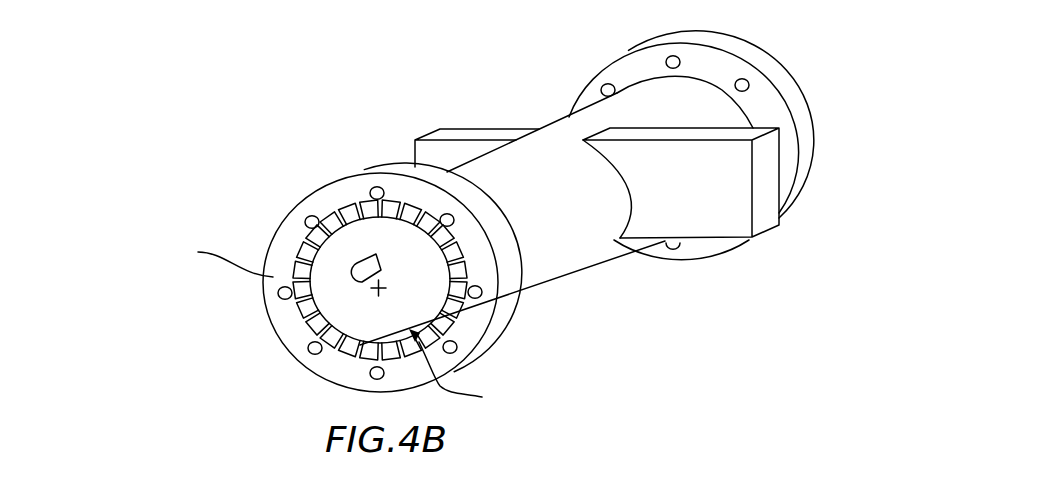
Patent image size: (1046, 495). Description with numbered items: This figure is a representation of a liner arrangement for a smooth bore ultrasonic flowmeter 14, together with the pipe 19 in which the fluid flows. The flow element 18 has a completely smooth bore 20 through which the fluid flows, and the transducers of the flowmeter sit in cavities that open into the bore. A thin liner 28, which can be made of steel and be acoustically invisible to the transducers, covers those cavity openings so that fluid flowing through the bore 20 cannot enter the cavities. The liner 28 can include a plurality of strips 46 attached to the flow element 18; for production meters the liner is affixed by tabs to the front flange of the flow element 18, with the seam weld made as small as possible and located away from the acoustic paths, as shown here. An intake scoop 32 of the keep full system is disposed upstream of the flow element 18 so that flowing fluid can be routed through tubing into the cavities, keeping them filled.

The ultrasonic flowmeter 14 is at (781, 255).
The flow element 18 is at (622, 283).
The pipe / flow conduit 19 is at (557, 135).
The bore 20 is at (290, 311).
The liner 28 is at (436, 291).
The intake scoop 32 is at (370, 262).
The strips 46 is at (326, 189).